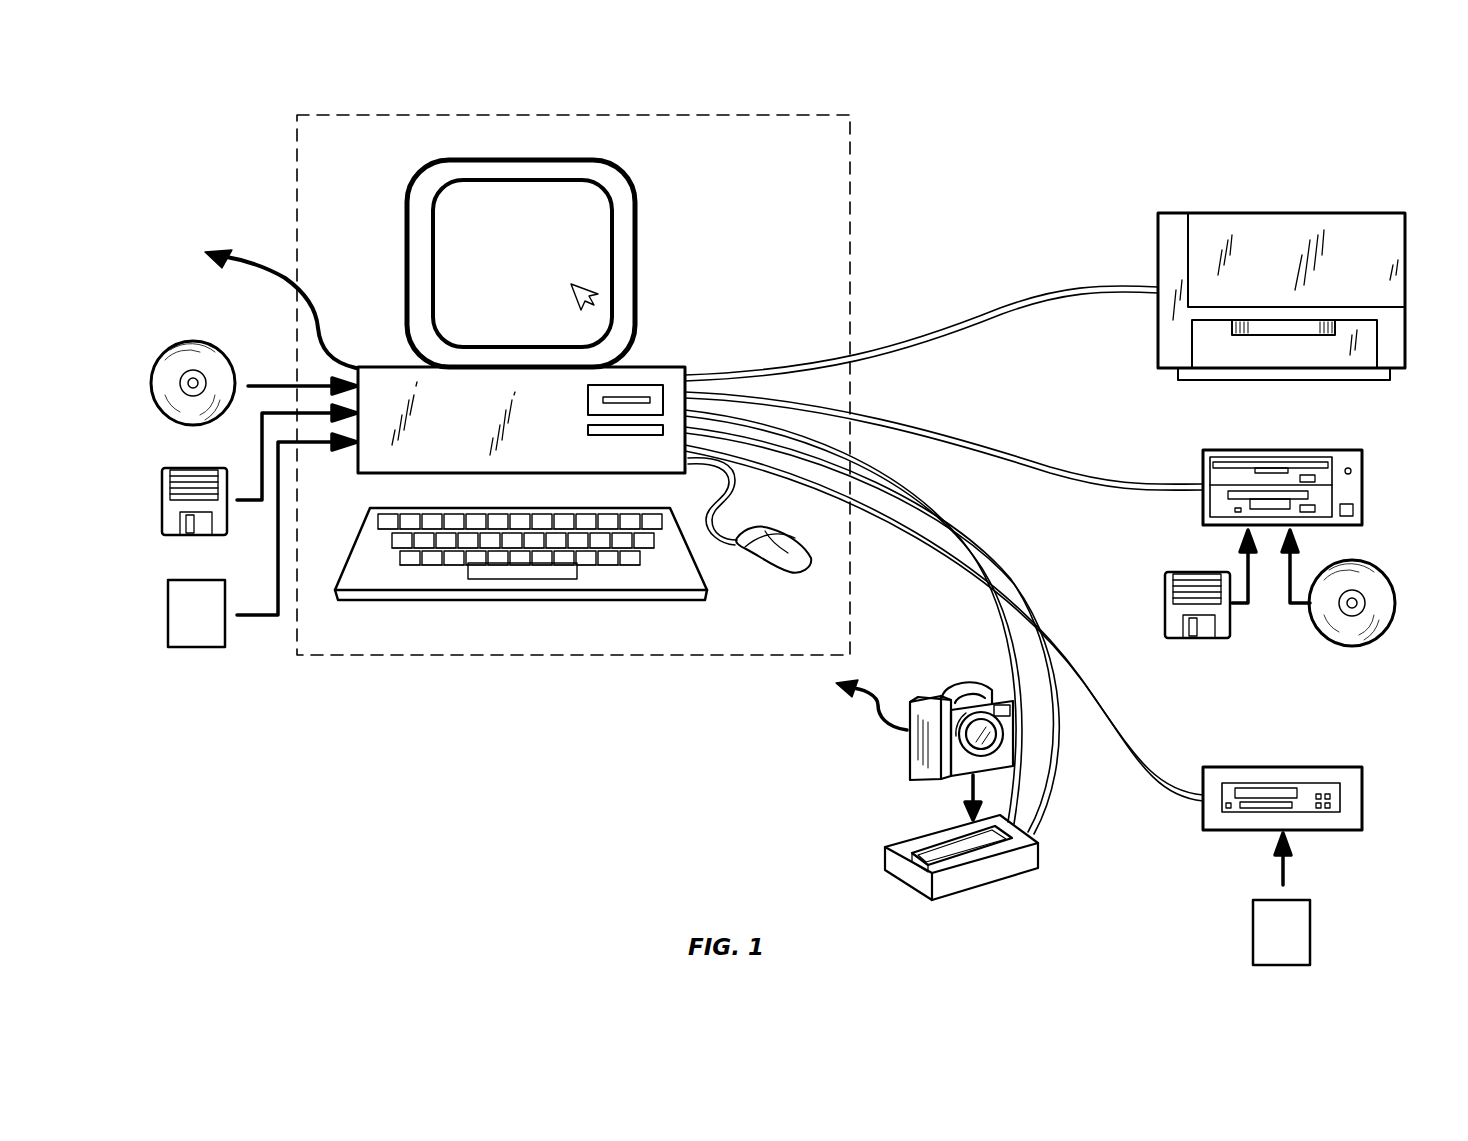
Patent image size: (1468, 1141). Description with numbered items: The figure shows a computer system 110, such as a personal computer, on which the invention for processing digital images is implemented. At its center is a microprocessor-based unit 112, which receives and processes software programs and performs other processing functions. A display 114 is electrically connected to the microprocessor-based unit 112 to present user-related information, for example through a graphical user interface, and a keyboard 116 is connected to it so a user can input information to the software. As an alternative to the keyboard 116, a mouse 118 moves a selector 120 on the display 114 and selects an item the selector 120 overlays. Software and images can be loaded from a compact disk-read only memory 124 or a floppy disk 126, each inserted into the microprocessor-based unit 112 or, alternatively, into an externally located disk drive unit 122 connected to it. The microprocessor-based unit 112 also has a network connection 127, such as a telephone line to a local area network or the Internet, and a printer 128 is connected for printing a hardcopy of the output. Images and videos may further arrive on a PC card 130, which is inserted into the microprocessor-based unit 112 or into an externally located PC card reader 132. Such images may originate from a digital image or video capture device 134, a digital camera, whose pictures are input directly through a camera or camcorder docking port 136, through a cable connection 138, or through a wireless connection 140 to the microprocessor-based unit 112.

The computer system 110 is at (297, 172).
The microprocessor-based unit 112 is at (392, 366).
The display 114 is at (417, 170).
The keyboard 116 is at (437, 600).
The mouse 118 is at (760, 575).
The selector 120 is at (592, 290).
The externally located disk drive unit 122 is at (1362, 480).
The compact disk-read only memory (CD-ROM) 124 is at (150, 383).
The floppy disk 126 is at (160, 503).
The network connection 127 is at (258, 278).
The printer 128 is at (1268, 213).
The personal computer card (PC card) 130 is at (168, 613).
The externally located PC card reader 132 is at (1362, 796).
The digital image or video capture device 134 is at (962, 678).
The camera or camcorder docking port 136 is at (885, 852).
The cable connection 138 is at (955, 578).
The wireless connection 140 is at (870, 720).